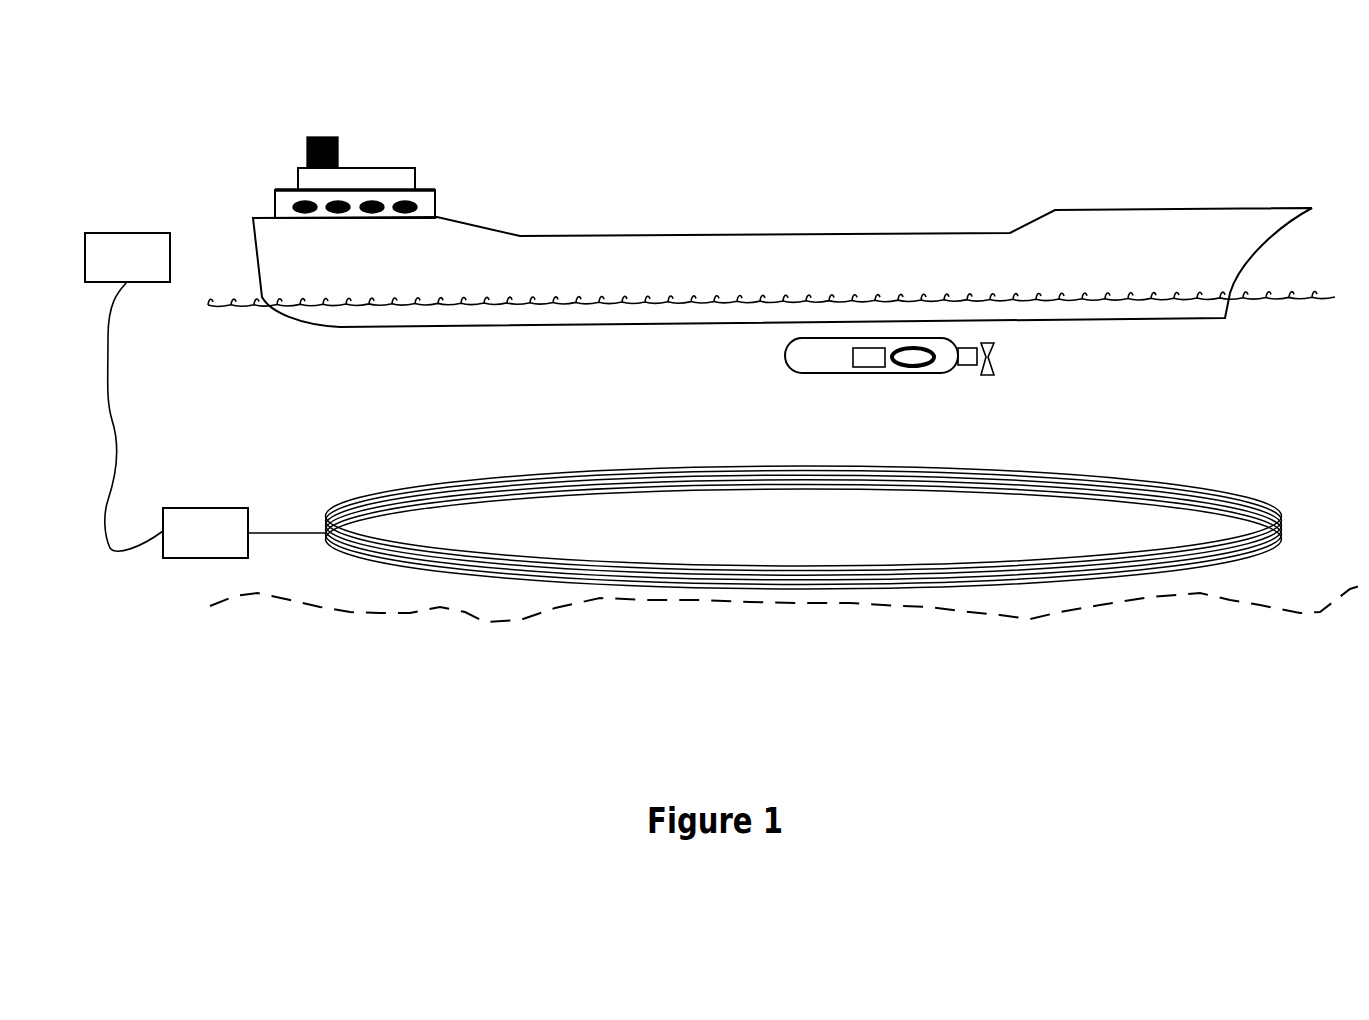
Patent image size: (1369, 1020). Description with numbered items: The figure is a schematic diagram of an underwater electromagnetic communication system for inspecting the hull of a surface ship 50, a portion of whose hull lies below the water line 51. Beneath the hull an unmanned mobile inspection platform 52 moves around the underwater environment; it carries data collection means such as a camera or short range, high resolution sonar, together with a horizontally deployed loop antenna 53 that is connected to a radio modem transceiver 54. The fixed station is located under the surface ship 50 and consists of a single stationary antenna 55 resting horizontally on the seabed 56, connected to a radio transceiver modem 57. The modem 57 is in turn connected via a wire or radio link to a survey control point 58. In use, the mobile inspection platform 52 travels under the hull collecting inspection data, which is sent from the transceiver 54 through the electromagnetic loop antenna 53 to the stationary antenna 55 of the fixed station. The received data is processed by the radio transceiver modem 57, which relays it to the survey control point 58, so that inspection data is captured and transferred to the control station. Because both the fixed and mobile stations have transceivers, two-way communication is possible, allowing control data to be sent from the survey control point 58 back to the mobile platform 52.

The surface ship 50 is at (792, 243).
The water line 51 is at (242, 323).
The unmanned mobile inspection platform 52 is at (759, 364).
The loop antenna 53 is at (944, 381).
The radio modem transceiver 54 is at (835, 383).
The stationary antenna 55 is at (950, 611).
The seabed 56 is at (427, 630).
The radio transceiver modem 57 is at (208, 585).
The survey control point 58 is at (139, 212).